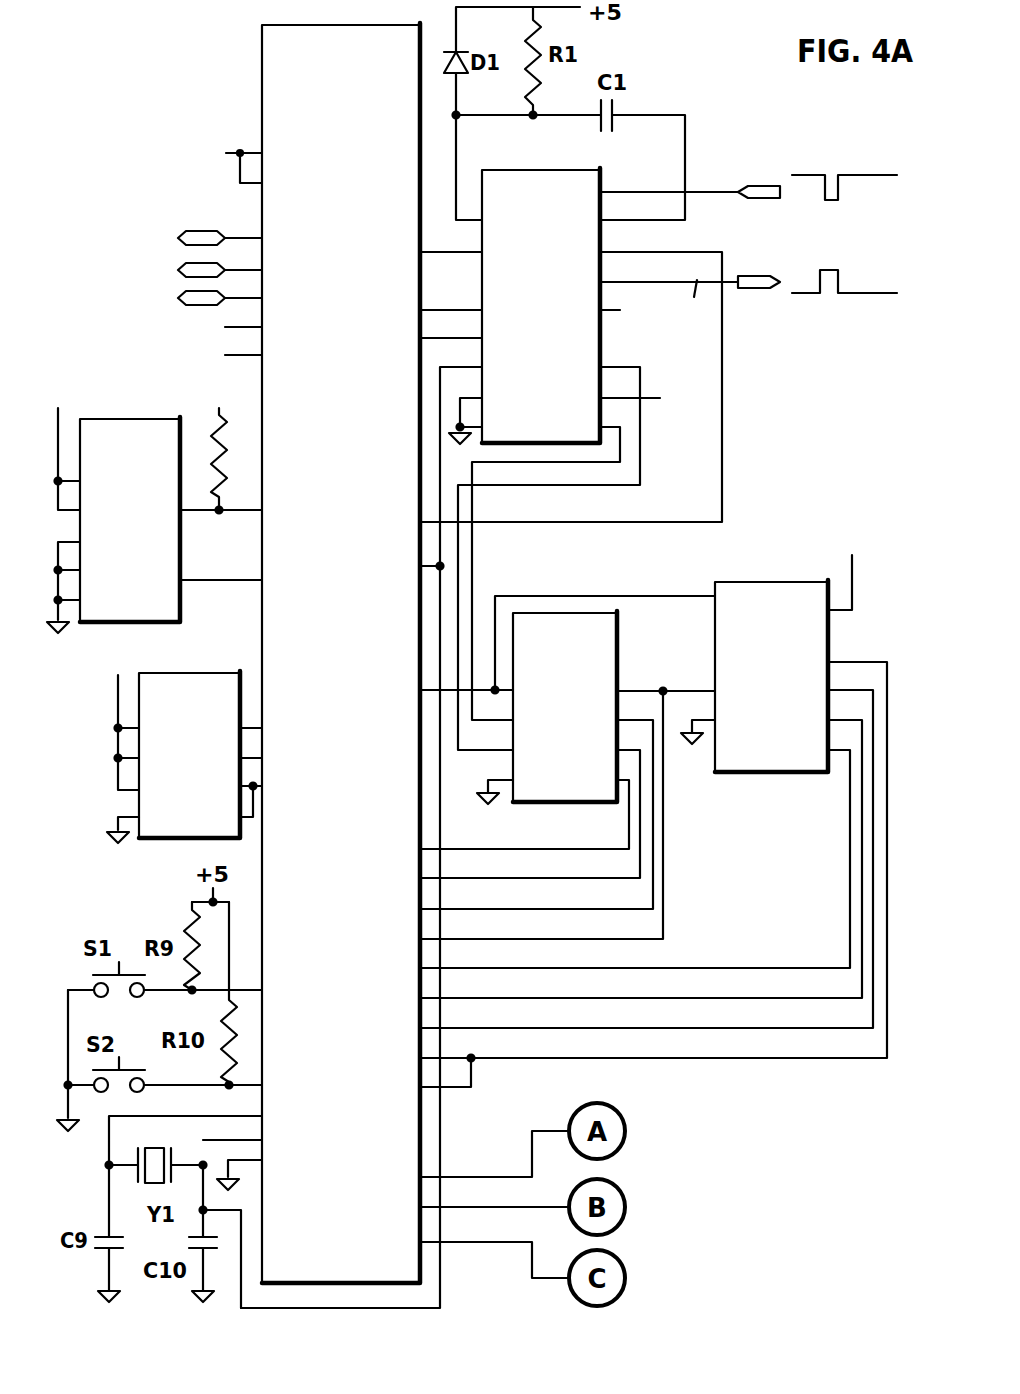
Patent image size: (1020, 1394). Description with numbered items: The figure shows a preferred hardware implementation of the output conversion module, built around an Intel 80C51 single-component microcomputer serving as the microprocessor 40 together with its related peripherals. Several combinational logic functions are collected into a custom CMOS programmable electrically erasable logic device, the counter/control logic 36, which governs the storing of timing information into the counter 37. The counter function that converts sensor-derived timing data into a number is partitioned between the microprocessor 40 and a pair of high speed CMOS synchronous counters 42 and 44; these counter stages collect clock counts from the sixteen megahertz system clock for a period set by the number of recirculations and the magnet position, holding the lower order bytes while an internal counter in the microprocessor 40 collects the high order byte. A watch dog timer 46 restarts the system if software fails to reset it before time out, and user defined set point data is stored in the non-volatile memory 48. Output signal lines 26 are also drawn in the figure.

The microprocessor 40 is at (262, 78).
The counter/control logic 36 is at (600, 181).
The output signal lines with pulse waveforms 26 is at (703, 188).
The counter 37 is at (786, 536).
The high speed CMOS synchronous counter 42 is at (617, 652).
The high speed CMOS synchronous counter 44 is at (752, 582).
The watch dog timer 46 is at (120, 419).
The non-volatile memory 48 is at (187, 673).